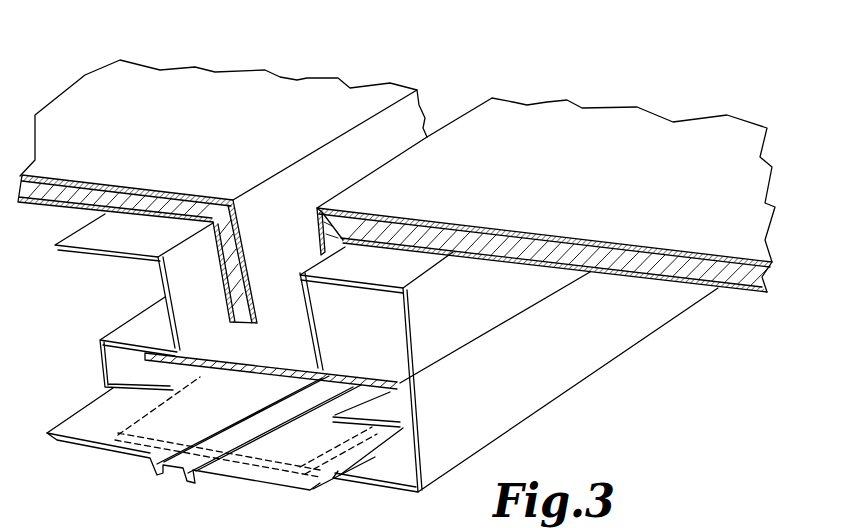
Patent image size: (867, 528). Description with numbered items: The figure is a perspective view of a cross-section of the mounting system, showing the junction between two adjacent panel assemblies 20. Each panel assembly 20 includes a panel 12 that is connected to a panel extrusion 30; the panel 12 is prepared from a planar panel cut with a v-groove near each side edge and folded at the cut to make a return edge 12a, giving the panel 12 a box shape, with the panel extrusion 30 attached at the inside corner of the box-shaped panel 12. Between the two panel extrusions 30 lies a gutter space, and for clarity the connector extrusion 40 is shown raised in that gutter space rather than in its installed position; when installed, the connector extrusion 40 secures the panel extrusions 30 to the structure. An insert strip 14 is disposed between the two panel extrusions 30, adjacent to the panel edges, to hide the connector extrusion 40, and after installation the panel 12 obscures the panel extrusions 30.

The panel 12 is at (191, 138).
The return edge 12a is at (245, 233).
The insert strip 14 is at (299, 341).
The panel assembly 20 is at (308, 72).
The panel extrusion 30 is at (203, 293).
The connector extrusion 40 is at (150, 452).